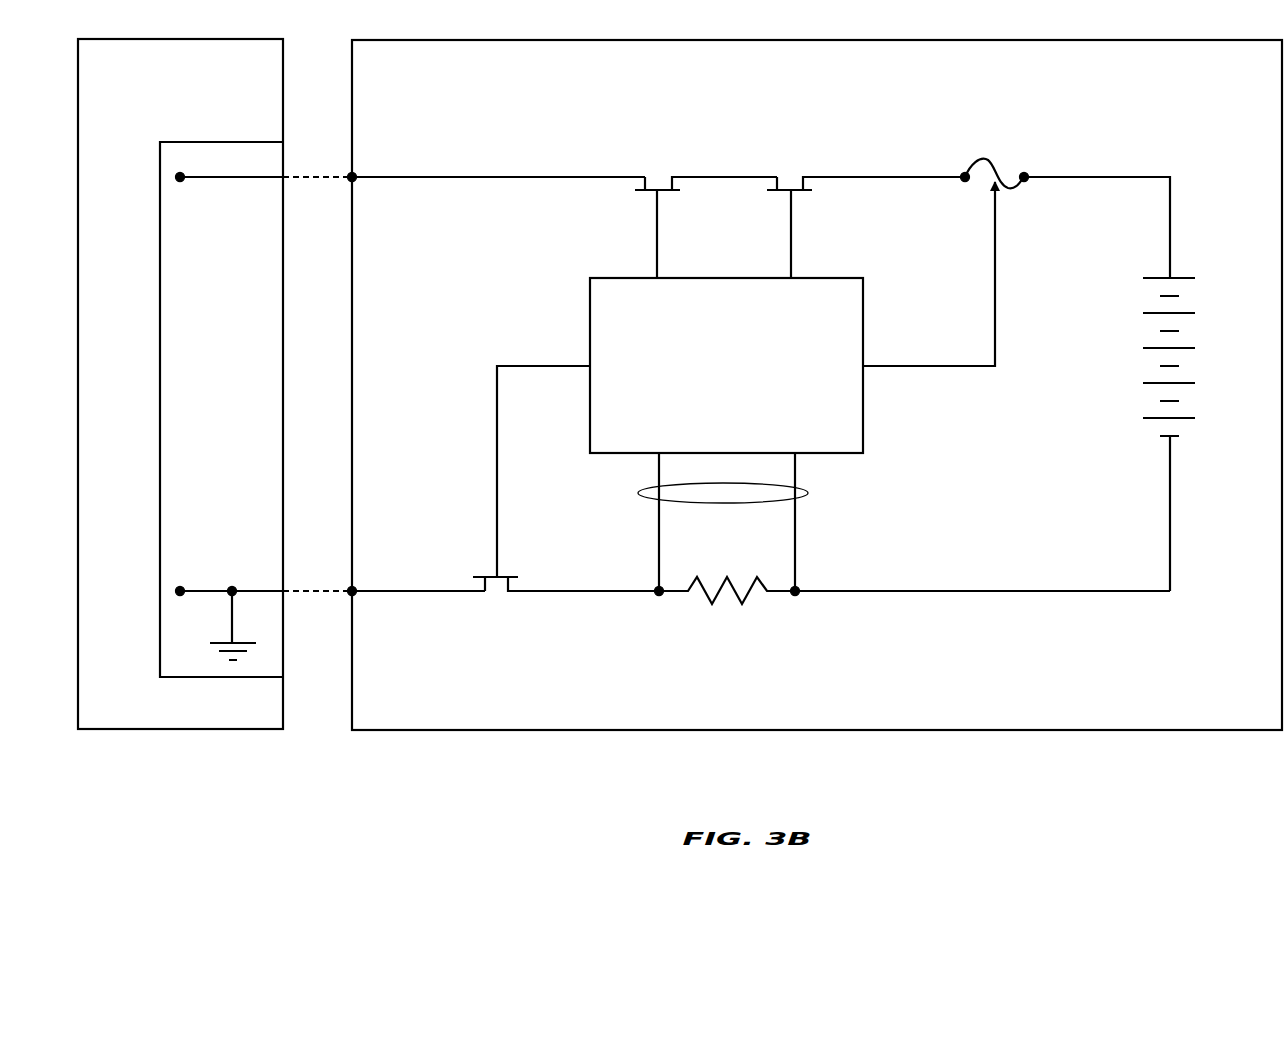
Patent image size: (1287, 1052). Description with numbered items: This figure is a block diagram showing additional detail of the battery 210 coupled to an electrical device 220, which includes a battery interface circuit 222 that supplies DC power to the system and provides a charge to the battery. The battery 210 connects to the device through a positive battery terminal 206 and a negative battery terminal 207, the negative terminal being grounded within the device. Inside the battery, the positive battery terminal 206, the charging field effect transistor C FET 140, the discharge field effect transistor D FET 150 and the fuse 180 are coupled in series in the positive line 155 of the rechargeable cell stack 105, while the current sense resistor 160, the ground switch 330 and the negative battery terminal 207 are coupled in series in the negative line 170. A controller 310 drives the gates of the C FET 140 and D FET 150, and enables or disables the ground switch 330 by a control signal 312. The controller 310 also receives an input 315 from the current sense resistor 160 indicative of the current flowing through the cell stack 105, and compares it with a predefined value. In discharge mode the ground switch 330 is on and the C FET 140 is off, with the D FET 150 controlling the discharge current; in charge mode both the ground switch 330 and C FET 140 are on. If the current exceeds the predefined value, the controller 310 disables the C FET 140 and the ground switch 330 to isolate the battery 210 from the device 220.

The electrical device 220 is at (164, 95).
The battery interface circuit 222 is at (158, 349).
The positive battery terminal 206 is at (354, 175).
The negative battery terminal 207 is at (355, 595).
The battery 210 is at (1255, 698).
The C FET 140 is at (660, 172).
The D FET 150 is at (793, 172).
The fuse 180 is at (997, 168).
The positive line 155 is at (1118, 176).
The rechargeable cell stack 105 is at (1112, 293).
The controller 310 is at (710, 390).
The control signal 312 is at (545, 364).
The ground switch 330 is at (470, 577).
The input 315 is at (808, 490).
The current sense resistor 160 is at (747, 602).
The negative line 170 is at (1110, 593).